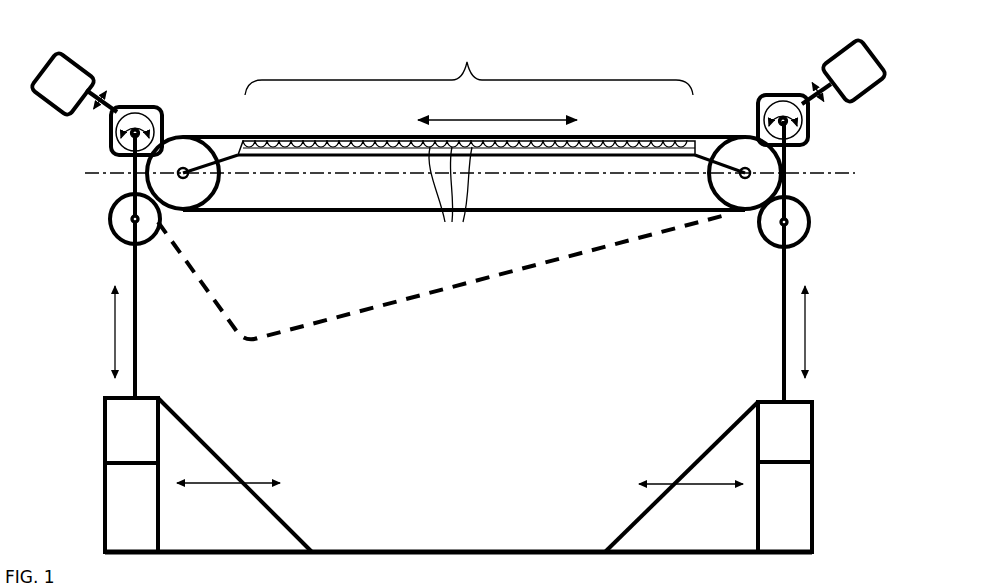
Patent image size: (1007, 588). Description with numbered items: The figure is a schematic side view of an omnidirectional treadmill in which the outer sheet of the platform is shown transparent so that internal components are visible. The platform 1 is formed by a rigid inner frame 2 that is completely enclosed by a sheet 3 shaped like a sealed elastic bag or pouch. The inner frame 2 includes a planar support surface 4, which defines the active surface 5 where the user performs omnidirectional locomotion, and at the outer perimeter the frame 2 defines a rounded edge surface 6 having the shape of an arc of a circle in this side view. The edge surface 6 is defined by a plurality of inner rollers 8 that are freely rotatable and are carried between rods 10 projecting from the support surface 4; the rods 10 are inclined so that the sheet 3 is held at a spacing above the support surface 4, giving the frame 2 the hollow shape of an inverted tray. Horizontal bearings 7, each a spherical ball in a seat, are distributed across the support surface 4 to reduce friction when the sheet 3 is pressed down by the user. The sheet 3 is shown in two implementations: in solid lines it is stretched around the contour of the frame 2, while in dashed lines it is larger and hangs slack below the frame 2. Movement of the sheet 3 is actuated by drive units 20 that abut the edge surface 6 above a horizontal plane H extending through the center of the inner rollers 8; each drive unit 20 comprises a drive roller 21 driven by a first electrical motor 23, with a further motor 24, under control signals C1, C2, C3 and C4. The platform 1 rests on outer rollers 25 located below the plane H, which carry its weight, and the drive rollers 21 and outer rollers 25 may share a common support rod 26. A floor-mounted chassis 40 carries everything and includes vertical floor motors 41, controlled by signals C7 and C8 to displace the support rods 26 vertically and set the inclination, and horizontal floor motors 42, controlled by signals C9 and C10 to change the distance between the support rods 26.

The platform 1 is at (228, 131).
The inner frame 2 is at (292, 159).
The sheet 3 is at (521, 213).
The support surface 4 is at (317, 140).
The active surface 5 is at (469, 65).
The edge surface 6 is at (142, 180).
The horizontal bearings 7 is at (450, 202).
The inner rollers 8 is at (187, 193).
The rods 10 is at (233, 165).
The drive units 20 is at (110, 52).
The drive roller 21 is at (112, 141).
The first electrical motor 23 is at (165, 104).
The motor 24 is at (80, 52).
The outer rollers 25 is at (112, 225).
The support rod 26 is at (137, 330).
The chassis 40 is at (488, 546).
The vertical floor motors 41 is at (118, 412).
The horizontal floor motors 42 is at (130, 523).
The horizontal plane H is at (848, 175).
The control signal C1 is at (782, 91).
The control signal C2 is at (872, 98).
The control signal C3 is at (135, 102).
The control signal C4 is at (50, 112).
The control signal C7 is at (102, 440).
The control signal C8 is at (815, 438).
The control signal C9 is at (102, 508).
The control signal C10 is at (815, 509).